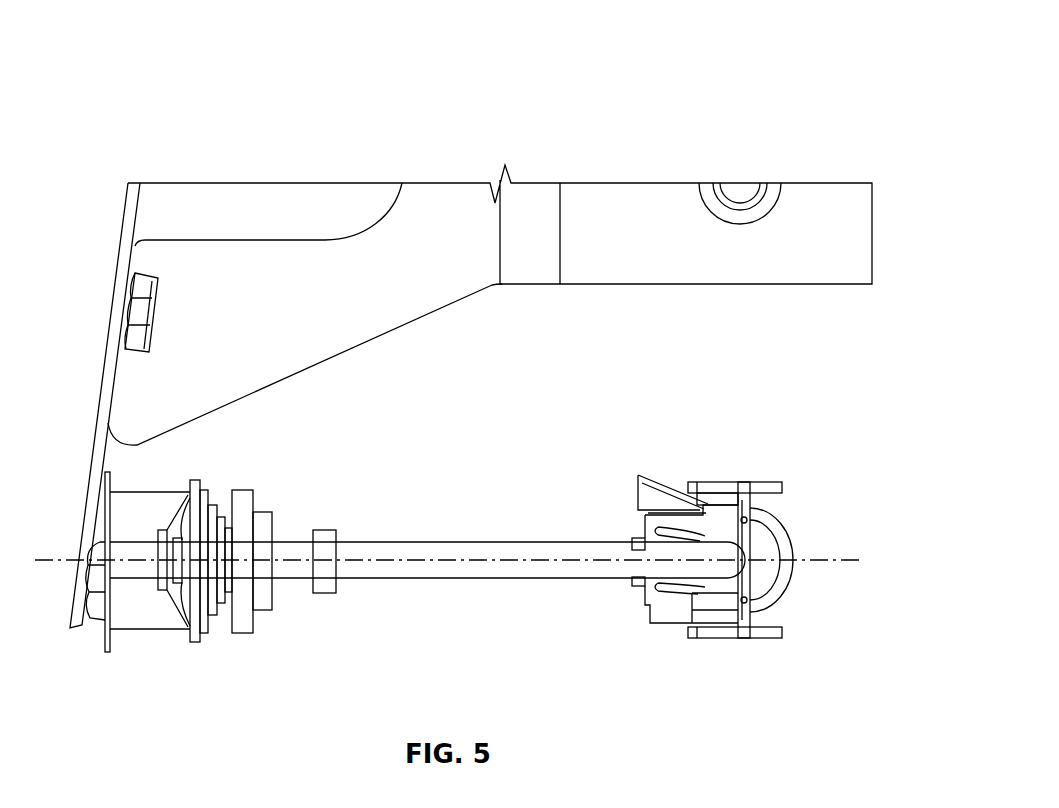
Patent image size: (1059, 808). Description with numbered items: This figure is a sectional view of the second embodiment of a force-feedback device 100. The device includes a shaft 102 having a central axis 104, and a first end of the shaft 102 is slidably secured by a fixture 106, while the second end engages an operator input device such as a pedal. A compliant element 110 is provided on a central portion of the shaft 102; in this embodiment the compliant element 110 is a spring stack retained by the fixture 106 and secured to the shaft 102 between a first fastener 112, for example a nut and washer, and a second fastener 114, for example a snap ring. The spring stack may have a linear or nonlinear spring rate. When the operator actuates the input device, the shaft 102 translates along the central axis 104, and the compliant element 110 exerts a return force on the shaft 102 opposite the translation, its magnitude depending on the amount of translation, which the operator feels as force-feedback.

The force-feedback device 100 is at (308, 120).
The shaft 102 is at (557, 542).
The central axis 104 is at (835, 560).
The fixture 106 is at (160, 497).
The compliant element 110 is at (202, 612).
The first fastener 112 is at (263, 512).
The second fastener 114 is at (188, 585).